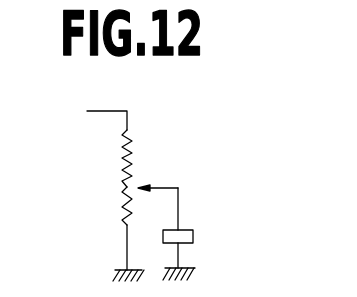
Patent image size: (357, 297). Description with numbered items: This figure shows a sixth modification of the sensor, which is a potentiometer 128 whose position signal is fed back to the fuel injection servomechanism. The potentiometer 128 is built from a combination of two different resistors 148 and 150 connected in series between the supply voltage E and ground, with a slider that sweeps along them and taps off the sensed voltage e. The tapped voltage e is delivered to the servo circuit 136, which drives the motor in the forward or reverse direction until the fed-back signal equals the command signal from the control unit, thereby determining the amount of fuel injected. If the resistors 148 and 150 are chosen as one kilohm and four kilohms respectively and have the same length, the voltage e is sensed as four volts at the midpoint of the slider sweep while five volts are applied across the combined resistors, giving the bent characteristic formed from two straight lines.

The sensor 128 is at (75, 170).
The resistor 148 is at (132, 153).
The resistor 150 is at (124, 191).
The servo circuit 136 is at (193, 237).